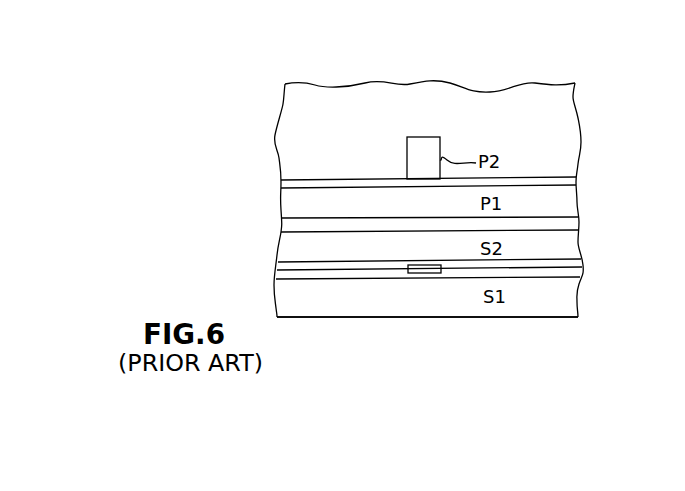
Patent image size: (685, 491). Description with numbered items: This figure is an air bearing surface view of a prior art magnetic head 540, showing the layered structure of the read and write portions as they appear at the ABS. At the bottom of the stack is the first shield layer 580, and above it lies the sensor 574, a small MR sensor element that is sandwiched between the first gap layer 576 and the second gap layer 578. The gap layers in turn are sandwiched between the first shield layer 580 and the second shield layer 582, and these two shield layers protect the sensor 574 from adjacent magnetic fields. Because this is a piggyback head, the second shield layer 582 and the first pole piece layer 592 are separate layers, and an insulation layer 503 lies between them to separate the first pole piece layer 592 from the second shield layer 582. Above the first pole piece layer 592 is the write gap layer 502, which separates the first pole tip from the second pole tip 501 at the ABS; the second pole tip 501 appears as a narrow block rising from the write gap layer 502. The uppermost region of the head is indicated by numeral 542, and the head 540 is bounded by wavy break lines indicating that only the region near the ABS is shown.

The magnetic head 540 is at (594, 95).
The top layer of sensor 542 is at (283, 113).
The second pole tip 501 is at (421, 148).
The write gap layer 502 is at (348, 180).
The first pole piece layer 592 is at (290, 200).
The insulation layer 503 is at (570, 224).
The second shield layer 582 is at (286, 249).
The first gap layer 576 is at (337, 279).
The sensor 574 is at (425, 273).
The second gap layer 578 is at (540, 262).
The first shield layer 580 is at (570, 297).